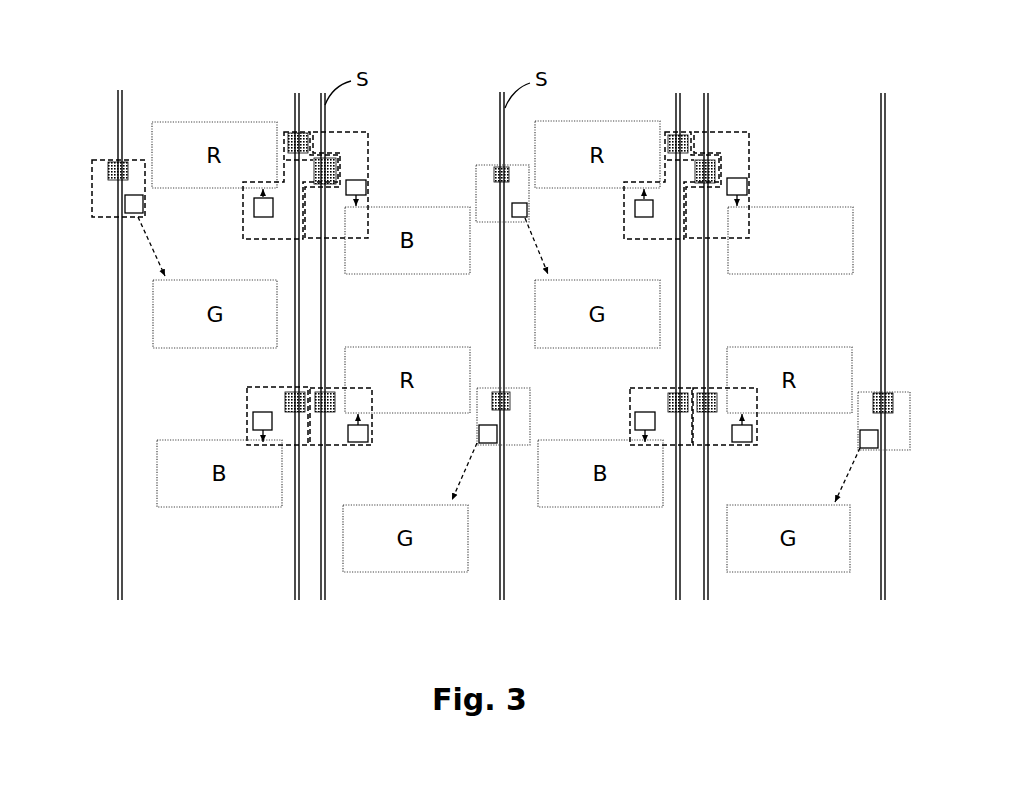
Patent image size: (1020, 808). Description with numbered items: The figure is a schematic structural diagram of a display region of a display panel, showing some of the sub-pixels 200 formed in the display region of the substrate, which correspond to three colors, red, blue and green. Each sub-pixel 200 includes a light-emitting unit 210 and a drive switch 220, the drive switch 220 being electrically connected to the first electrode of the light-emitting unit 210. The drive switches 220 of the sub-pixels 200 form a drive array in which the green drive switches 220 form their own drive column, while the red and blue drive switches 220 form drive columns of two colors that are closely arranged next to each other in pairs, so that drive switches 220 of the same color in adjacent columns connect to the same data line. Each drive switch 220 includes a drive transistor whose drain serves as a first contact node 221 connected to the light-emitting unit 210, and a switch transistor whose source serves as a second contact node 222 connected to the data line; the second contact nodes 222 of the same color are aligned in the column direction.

The sub-pixel 200 is at (823, 62).
The light-emitting unit 210 is at (817, 205).
The drive switch 220 is at (100, 157).
The first contact node 221 is at (132, 211).
The second contact node 222 is at (112, 173).